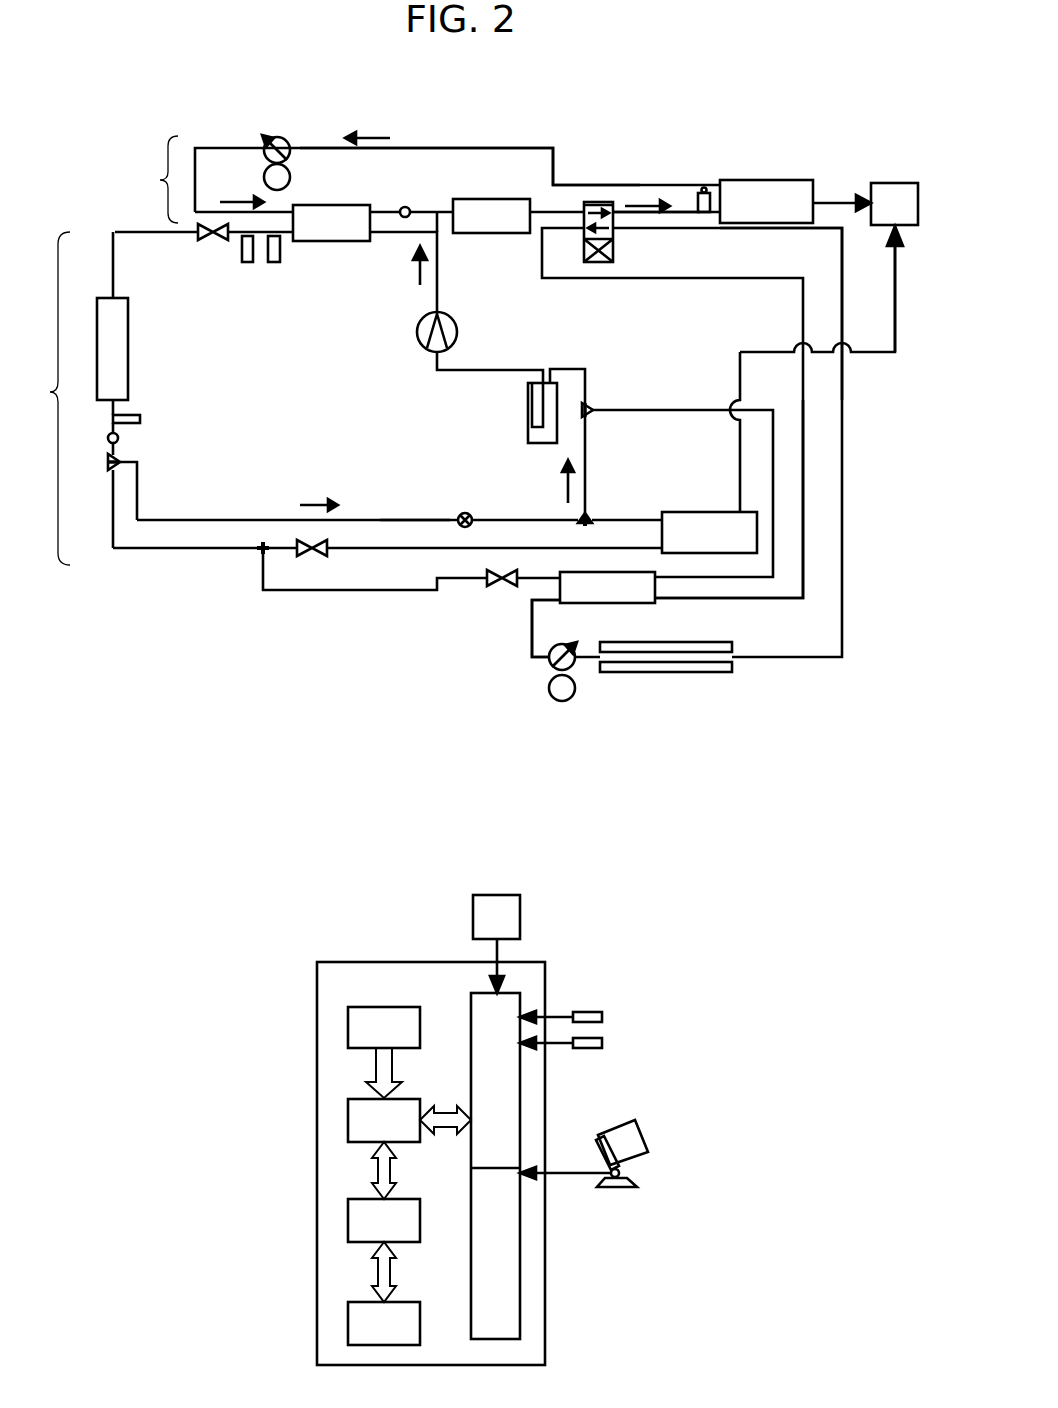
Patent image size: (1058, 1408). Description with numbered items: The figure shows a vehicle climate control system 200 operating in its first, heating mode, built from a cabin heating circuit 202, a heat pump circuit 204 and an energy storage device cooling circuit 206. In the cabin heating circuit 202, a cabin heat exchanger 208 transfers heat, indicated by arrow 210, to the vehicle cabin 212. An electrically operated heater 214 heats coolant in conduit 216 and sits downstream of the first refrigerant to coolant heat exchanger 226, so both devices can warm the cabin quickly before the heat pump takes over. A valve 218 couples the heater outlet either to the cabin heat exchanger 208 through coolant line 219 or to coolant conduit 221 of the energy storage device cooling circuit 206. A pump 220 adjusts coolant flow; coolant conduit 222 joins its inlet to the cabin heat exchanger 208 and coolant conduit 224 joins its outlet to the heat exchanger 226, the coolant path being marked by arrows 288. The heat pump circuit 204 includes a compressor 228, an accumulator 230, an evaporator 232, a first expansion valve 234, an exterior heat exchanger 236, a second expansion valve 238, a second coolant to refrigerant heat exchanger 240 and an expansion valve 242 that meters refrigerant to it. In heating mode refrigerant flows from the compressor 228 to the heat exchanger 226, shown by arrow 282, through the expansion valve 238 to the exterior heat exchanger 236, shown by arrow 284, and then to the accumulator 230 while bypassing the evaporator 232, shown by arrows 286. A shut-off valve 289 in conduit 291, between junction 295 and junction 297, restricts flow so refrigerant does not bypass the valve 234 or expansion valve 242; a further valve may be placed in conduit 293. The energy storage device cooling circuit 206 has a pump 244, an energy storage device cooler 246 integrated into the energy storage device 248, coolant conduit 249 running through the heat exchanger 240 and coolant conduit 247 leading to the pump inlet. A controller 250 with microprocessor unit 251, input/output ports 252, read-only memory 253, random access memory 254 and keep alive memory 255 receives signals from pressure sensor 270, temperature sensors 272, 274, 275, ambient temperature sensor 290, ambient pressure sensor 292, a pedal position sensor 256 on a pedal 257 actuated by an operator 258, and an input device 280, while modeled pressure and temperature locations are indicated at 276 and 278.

The climate control system 200 is at (872, 103).
The cabin heating circuit 202 is at (151, 179).
The heat pump circuit 204 is at (44, 398).
The energy storage device cooling circuit 206 is at (872, 608).
The cabin heat exchanger 208 is at (724, 182).
The arrow 210 is at (840, 200).
The vehicle cabin 212 is at (875, 183).
The electrically operated heater 214 is at (457, 200).
The conduit 216 is at (437, 210).
The valve 218 is at (616, 240).
The coolant line 219 is at (678, 210).
The pump 220 is at (277, 134).
The coolant conduit 221 is at (713, 232).
The coolant conduit 222 is at (503, 147).
The coolant conduit 224 is at (224, 147).
The first refrigerant to coolant heat exchanger 226 is at (318, 243).
The compressor 228 is at (417, 332).
The accumulator 230 is at (526, 400).
The evaporator 232 is at (670, 512).
The first expansion valve 234 is at (316, 553).
The exterior heat exchanger 236 is at (129, 393).
The second expansion valve 238 is at (207, 240).
The second coolant to refrigerant heat exchanger 240 is at (606, 604).
The expansion valve 242 is at (497, 588).
The pump 244 is at (535, 676).
The energy storage device cooler 246 is at (615, 674).
The coolant conduit 247 is at (531, 641).
The energy storage device 248 is at (682, 675).
The coolant conduit 249 is at (720, 600).
The controller 250 is at (326, 962).
The microprocessor unit 251 is at (398, 1099).
The input/output ports 252 is at (468, 1028).
The read-only memory 253 is at (352, 1007).
The random access memory 254 is at (402, 1199).
The keep alive memory 255 is at (402, 1302).
The pedal position sensor 256 is at (622, 1178).
The pedal 257 is at (596, 1148).
The operator 258 is at (645, 1136).
The pressure sensor 270 is at (274, 264).
The temperature sensor 272 is at (247, 264).
The temperature sensor 274 is at (142, 419).
The temperature sensor 275 is at (703, 190).
The modeled pressure location 276 is at (120, 438).
The modeled temperature location 278 is at (402, 208).
The input device 280 is at (481, 895).
The arrow 282 is at (420, 272).
The arrow 284 is at (93, 252).
The arrows 286 is at (898, 320).
The arrows 288 is at (366, 137).
The valve 289 is at (465, 512).
The ambient temperature sensor 290 is at (587, 1011).
The conduit 291 is at (410, 518).
The ambient pressure sensor 292 is at (587, 1050).
The conduit 293 is at (590, 455).
The junction 295 is at (107, 462).
The junction 297 is at (584, 523).